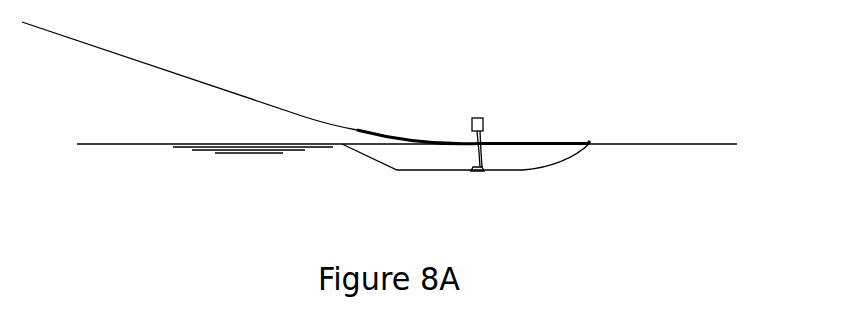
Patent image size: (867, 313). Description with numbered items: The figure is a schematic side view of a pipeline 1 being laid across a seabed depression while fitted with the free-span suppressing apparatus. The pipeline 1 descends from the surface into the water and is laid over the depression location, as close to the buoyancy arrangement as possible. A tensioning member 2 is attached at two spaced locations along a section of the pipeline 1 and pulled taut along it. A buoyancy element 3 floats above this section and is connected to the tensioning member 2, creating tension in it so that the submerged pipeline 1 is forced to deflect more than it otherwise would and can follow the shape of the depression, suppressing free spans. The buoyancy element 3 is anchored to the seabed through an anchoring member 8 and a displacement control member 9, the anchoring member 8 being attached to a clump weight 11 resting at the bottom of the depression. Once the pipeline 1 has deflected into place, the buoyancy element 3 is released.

The pipeline 1 is at (305, 117).
The tensioning member 2 is at (366, 131).
The buoyancy element 3 is at (476, 118).
The displacement control member 9 is at (483, 158).
The anchoring member 8 is at (478, 155).
The clump weight 11 is at (475, 173).